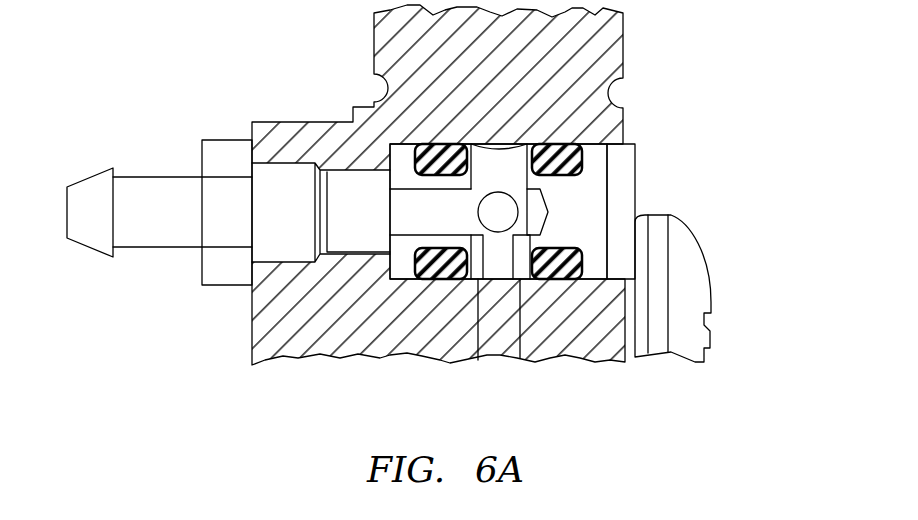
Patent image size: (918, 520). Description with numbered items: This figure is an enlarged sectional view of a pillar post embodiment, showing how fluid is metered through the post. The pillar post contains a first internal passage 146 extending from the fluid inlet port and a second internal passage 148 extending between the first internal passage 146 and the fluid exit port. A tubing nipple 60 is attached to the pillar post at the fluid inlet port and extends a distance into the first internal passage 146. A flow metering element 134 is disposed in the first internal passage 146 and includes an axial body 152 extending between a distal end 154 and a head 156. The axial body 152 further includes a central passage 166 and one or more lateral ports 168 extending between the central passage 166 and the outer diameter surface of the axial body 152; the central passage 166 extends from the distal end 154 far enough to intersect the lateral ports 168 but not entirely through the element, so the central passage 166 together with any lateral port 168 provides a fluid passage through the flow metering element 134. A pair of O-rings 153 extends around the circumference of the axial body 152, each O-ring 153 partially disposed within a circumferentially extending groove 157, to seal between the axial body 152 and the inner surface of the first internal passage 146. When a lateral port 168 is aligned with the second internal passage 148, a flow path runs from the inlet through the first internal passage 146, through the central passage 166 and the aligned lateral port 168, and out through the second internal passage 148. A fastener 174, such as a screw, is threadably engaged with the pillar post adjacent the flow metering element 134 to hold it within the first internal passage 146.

The tubing nipple 60 is at (88, 247).
The flow metering element 134 is at (516, 232).
The first internal passage 146 is at (358, 232).
The second internal passage 148 is at (488, 347).
The axial body 152 is at (405, 143).
The O-ring 153 is at (438, 277).
The distal end 154 is at (390, 180).
The head 156 is at (637, 158).
The circumferentially extending groove 157 is at (580, 143).
The central passage 166 is at (402, 208).
The lateral port 168 is at (497, 252).
The fastener 174 is at (711, 276).